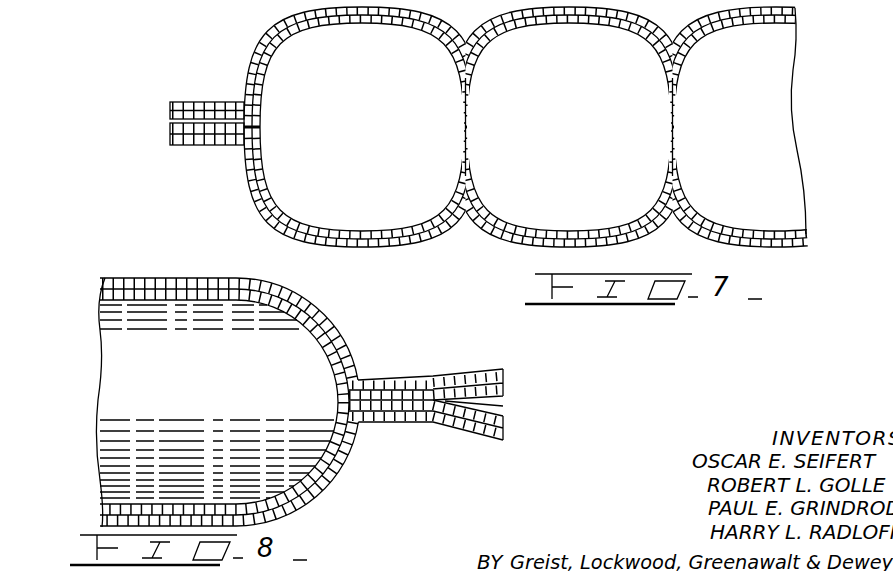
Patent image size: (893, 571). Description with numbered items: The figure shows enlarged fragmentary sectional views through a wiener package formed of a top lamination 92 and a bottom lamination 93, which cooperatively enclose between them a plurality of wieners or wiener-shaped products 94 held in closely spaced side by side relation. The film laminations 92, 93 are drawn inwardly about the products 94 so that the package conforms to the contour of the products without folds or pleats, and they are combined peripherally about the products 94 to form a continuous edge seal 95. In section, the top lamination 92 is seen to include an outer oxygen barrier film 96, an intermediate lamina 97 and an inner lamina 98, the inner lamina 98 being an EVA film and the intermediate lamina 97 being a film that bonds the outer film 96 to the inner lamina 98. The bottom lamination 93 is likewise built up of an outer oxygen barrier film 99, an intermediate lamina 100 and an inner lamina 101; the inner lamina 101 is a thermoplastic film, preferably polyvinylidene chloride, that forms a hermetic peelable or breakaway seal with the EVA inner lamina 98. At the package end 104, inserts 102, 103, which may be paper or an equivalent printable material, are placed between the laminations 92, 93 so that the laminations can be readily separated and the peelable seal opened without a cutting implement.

In FIG. 7, the top lamination 92 is at (166, 101).
In FIG. 7, the bottom lamination 93 is at (166, 123).
In FIG. 7, the wiener-shaped products 94 is at (428, 155).
In FIG. 8, the wiener-shaped products 94 is at (203, 385).
In FIG. 8, the continuous edge seal 95 is at (384, 382).
In FIG. 7, the outer oxygen barrier film 96 is at (203, 108).
In FIG. 8, the outer oxygen barrier film 96 is at (138, 278).
In FIG. 7, the intermediate lamina 97 is at (221, 113).
In FIG. 8, the intermediate lamina 97 is at (222, 289).
In FIG. 7, the inner lamina 98 is at (229, 115).
In FIG. 8, the inner lamina 98 is at (265, 302).
In FIG. 7, the outer oxygen barrier film 99 is at (357, 247).
In FIG. 8, the outer oxygen barrier film 99 is at (333, 485).
In FIG. 7, the intermediate lamina 100 is at (453, 211).
In FIG. 8, the intermediate lamina 100 is at (108, 517).
In FIG. 7, the inner lamina 101 is at (301, 218).
In FIG. 8, the inner lamina 101 is at (112, 508).
In FIG. 8, the insert 102 is at (500, 396).
In FIG. 8, the insert 103 is at (503, 408).
In FIG. 8, the package end 104 is at (481, 369).